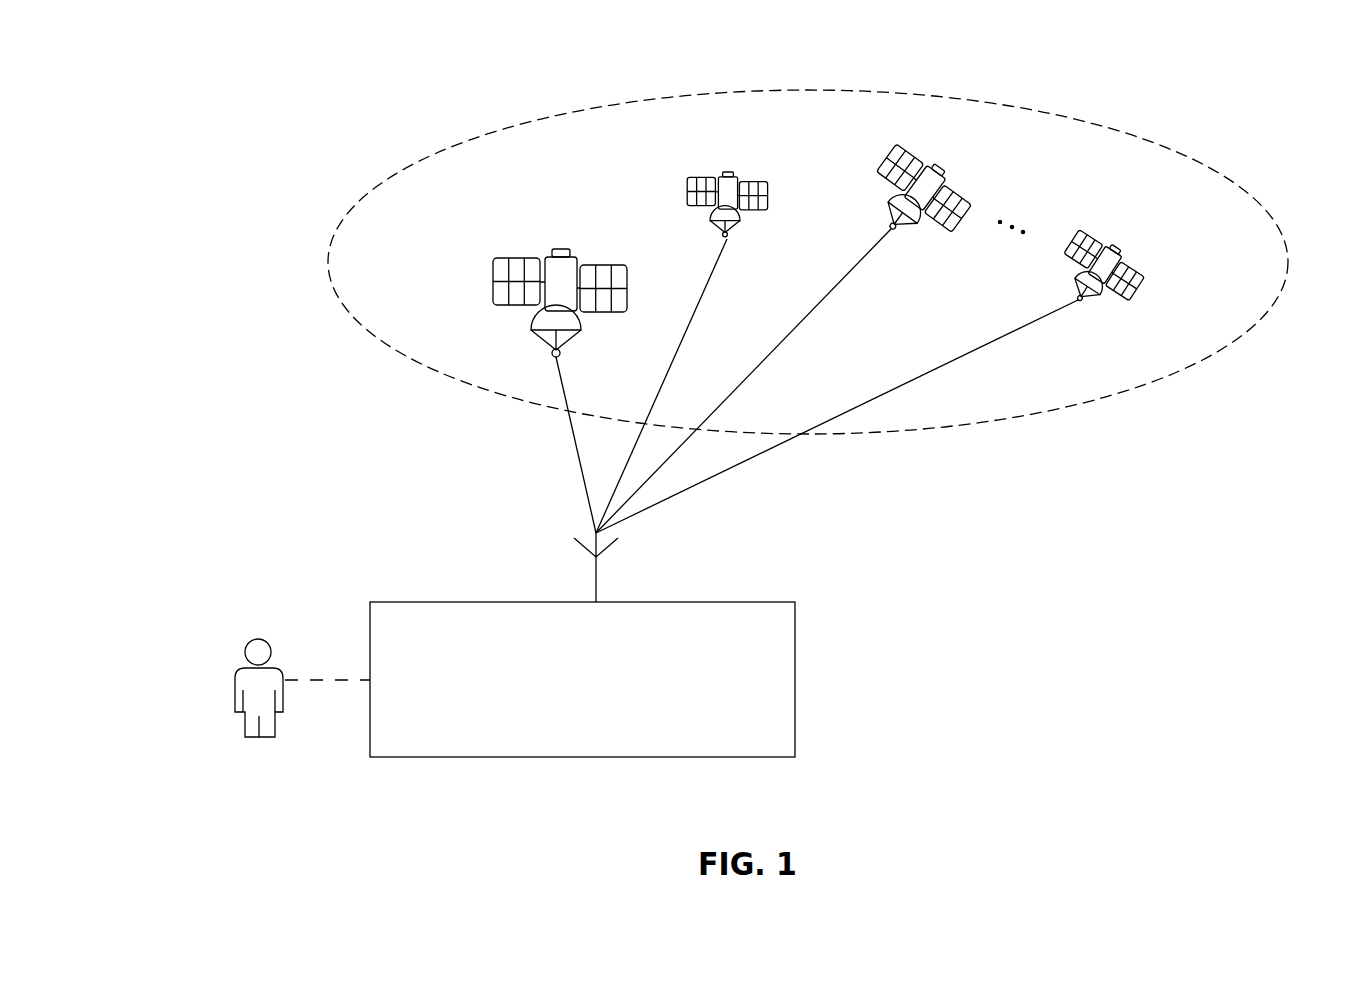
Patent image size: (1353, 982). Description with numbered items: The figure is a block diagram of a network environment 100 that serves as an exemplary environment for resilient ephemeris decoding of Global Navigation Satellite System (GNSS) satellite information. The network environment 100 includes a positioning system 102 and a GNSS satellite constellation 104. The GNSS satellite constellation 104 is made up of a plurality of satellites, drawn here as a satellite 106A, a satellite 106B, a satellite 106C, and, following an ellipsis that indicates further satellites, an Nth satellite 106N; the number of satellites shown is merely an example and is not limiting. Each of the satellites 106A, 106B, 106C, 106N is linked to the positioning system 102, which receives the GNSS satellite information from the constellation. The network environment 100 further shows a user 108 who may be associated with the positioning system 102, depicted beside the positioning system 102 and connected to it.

The network environment 100 is at (178, 93).
The positioning system 102 is at (582, 679).
The GNSS satellite constellation 104 is at (345, 218).
The satellite 106A is at (497, 261).
The satellite 106B is at (707, 178).
The satellite 106C is at (893, 160).
The Nth satellite 106N is at (1086, 240).
The user 108 is at (240, 668).